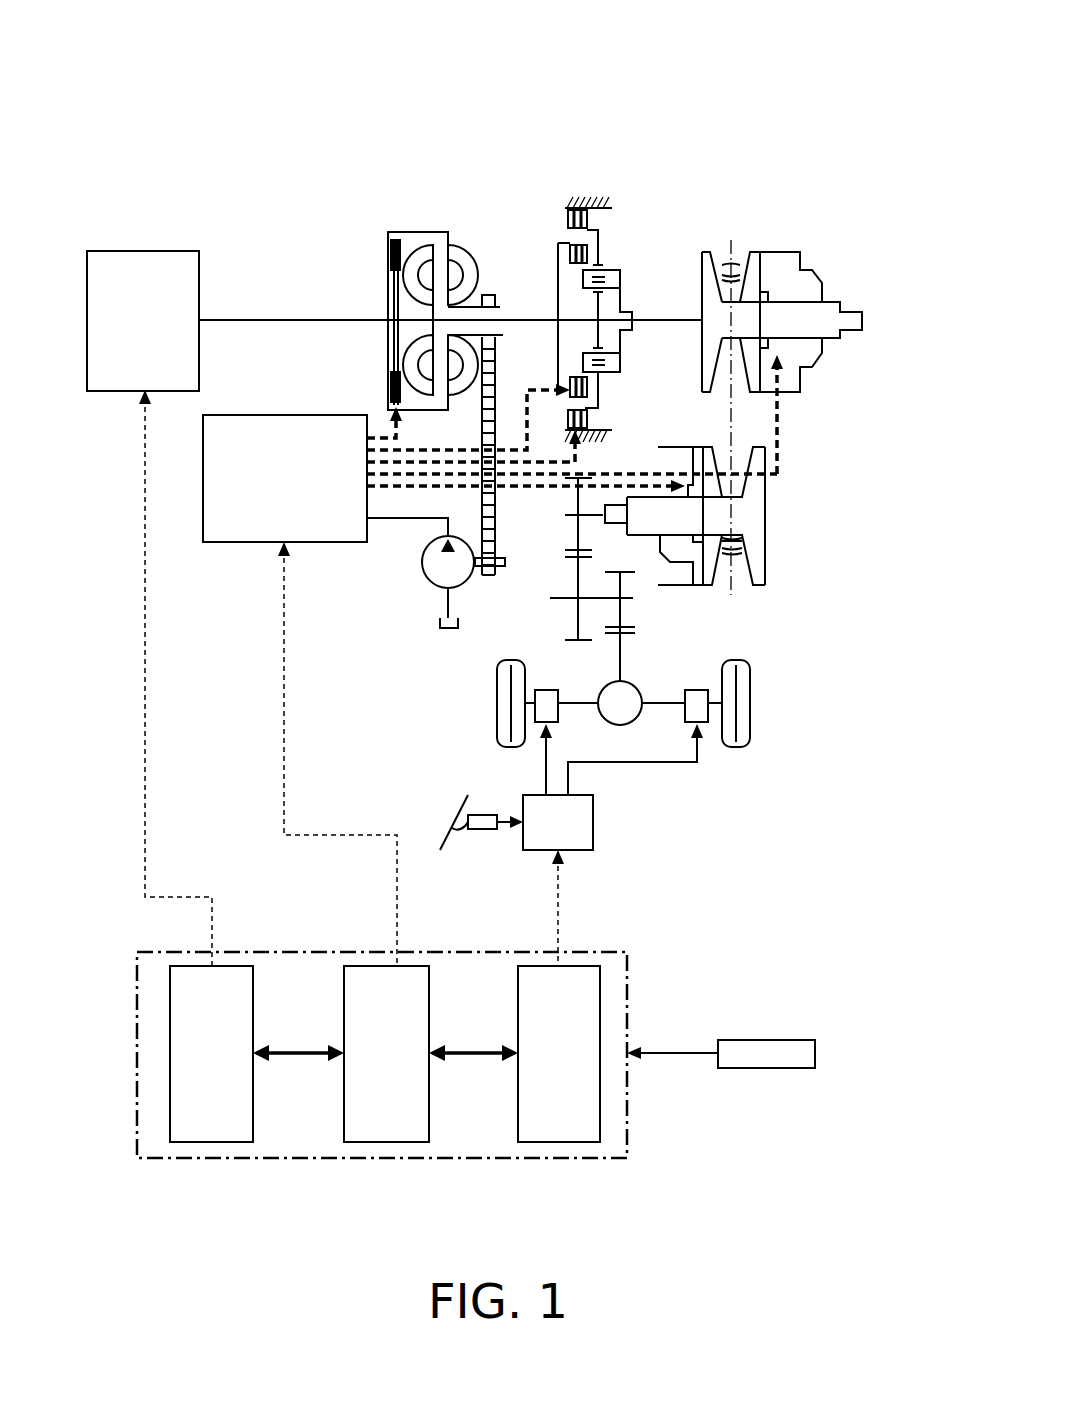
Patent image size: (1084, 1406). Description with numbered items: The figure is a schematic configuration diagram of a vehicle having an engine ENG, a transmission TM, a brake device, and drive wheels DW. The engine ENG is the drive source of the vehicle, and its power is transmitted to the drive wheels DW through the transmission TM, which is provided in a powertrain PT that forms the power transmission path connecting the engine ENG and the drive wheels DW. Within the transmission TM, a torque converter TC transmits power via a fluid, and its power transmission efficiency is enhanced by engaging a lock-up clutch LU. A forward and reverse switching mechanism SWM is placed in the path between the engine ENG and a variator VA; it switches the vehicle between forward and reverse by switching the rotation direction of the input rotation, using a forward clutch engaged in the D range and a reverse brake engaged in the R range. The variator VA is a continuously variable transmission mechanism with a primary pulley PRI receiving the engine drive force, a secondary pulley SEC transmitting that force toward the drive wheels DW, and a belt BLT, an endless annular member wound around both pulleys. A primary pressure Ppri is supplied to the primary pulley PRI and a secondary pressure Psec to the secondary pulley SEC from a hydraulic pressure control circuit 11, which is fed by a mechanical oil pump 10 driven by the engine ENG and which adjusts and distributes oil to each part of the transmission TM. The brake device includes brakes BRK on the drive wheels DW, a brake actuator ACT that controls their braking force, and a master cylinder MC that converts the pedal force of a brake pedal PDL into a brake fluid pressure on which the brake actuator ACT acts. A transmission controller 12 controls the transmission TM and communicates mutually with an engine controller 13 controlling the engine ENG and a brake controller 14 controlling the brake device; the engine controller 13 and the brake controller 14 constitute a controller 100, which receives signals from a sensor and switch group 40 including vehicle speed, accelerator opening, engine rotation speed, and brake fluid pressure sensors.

The transmission TM is at (834, 84).
The engine ENG is at (143, 251).
The powertrain PT is at (316, 290).
The torque converter TC is at (388, 222).
The lock-up clutch LU is at (391, 244).
The forward and reverse switching mechanism SWM is at (570, 176).
The variator VA is at (765, 210).
The primary pulley PRI is at (824, 280).
The secondary pulley SEC is at (766, 543).
The belt BLT is at (738, 557).
The primary pressure Ppri is at (796, 414).
The secondary pressure Psec is at (530, 508).
The drive wheels DW is at (497, 703).
The brakes BRK is at (546, 690).
The brake actuator ACT is at (593, 820).
The master cylinder MC is at (482, 815).
The brake pedal PDL is at (457, 806).
The oil pump 10 is at (422, 563).
The hydraulic pressure control circuit 11 is at (283, 415).
The transmission controller 12 is at (385, 1142).
The engine controller 13 is at (213, 1142).
The brake controller 14 is at (560, 1142).
The sensor and switch group 40 is at (815, 1053).
The controller 100 is at (597, 952).